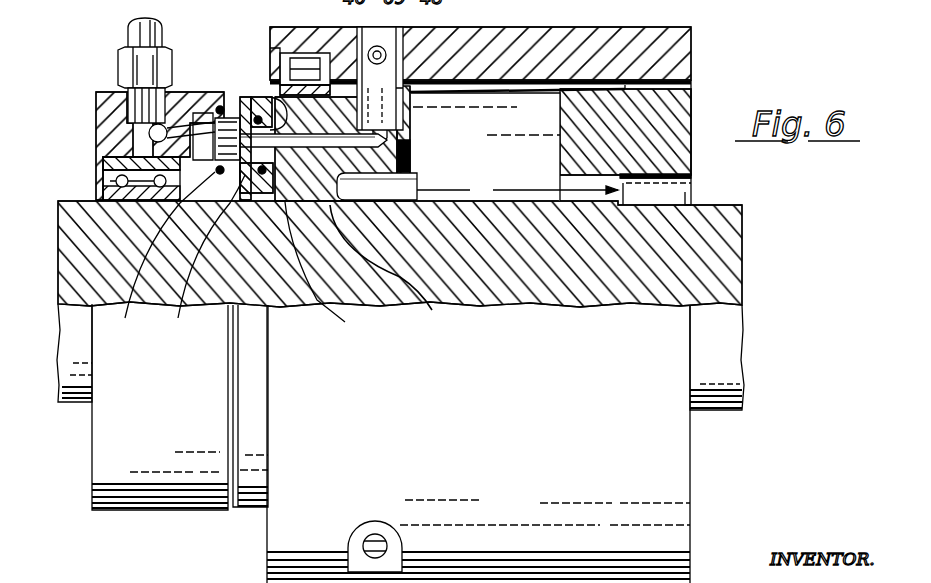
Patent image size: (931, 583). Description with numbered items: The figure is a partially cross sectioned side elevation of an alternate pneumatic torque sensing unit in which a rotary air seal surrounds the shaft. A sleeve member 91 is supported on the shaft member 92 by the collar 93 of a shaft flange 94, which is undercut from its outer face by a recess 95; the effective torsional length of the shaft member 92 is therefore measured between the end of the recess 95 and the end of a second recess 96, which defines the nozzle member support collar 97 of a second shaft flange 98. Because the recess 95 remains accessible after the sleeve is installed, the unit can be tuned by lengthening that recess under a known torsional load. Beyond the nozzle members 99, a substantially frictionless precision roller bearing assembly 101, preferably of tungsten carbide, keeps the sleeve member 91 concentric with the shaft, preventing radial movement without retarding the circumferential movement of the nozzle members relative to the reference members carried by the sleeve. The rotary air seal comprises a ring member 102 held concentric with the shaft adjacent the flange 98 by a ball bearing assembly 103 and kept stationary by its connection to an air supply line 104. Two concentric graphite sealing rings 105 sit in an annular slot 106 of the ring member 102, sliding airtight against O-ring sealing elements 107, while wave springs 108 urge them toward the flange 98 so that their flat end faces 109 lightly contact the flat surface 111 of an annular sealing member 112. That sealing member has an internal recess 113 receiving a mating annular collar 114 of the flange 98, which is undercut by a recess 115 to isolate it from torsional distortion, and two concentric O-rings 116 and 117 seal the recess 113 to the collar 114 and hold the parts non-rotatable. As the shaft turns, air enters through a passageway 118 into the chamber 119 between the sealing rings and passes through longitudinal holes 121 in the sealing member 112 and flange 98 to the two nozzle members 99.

The sleeve member 91 is at (686, 58).
The shaft member 92 is at (730, 205).
The collar 93 is at (686, 110).
The shaft flange 94 is at (566, 164).
The recess 95 is at (688, 197).
The recess 96 is at (410, 186).
The nozzle member support collar 97 is at (410, 152).
The shaft flange 98 is at (432, 310).
The nozzle members 99 is at (383, 33).
The precision roller bearing assembly 101 is at (305, 70).
The ring member 102 is at (98, 121).
The ball bearing assembly 103 is at (106, 192).
The air supply line 104 is at (130, 36).
The sealing rings 105 is at (158, 258).
The annular slot 106 is at (135, 100).
The O-ring sealing elements 107 is at (230, 118).
The wave springs 108 is at (106, 162).
The flat end faces 109 is at (243, 202).
The flat surface 111 is at (243, 140).
The annular sealing member 112 is at (224, 110).
The internal recess 113 is at (262, 115).
The annular collar 114 is at (336, 274).
The recess 115 is at (275, 202).
The O-ring 116 is at (243, 125).
The O-ring 117 is at (260, 202).
The passageway 118 is at (150, 140).
The chamber 119 is at (200, 260).
The longitudinal holes 121 is at (392, 141).